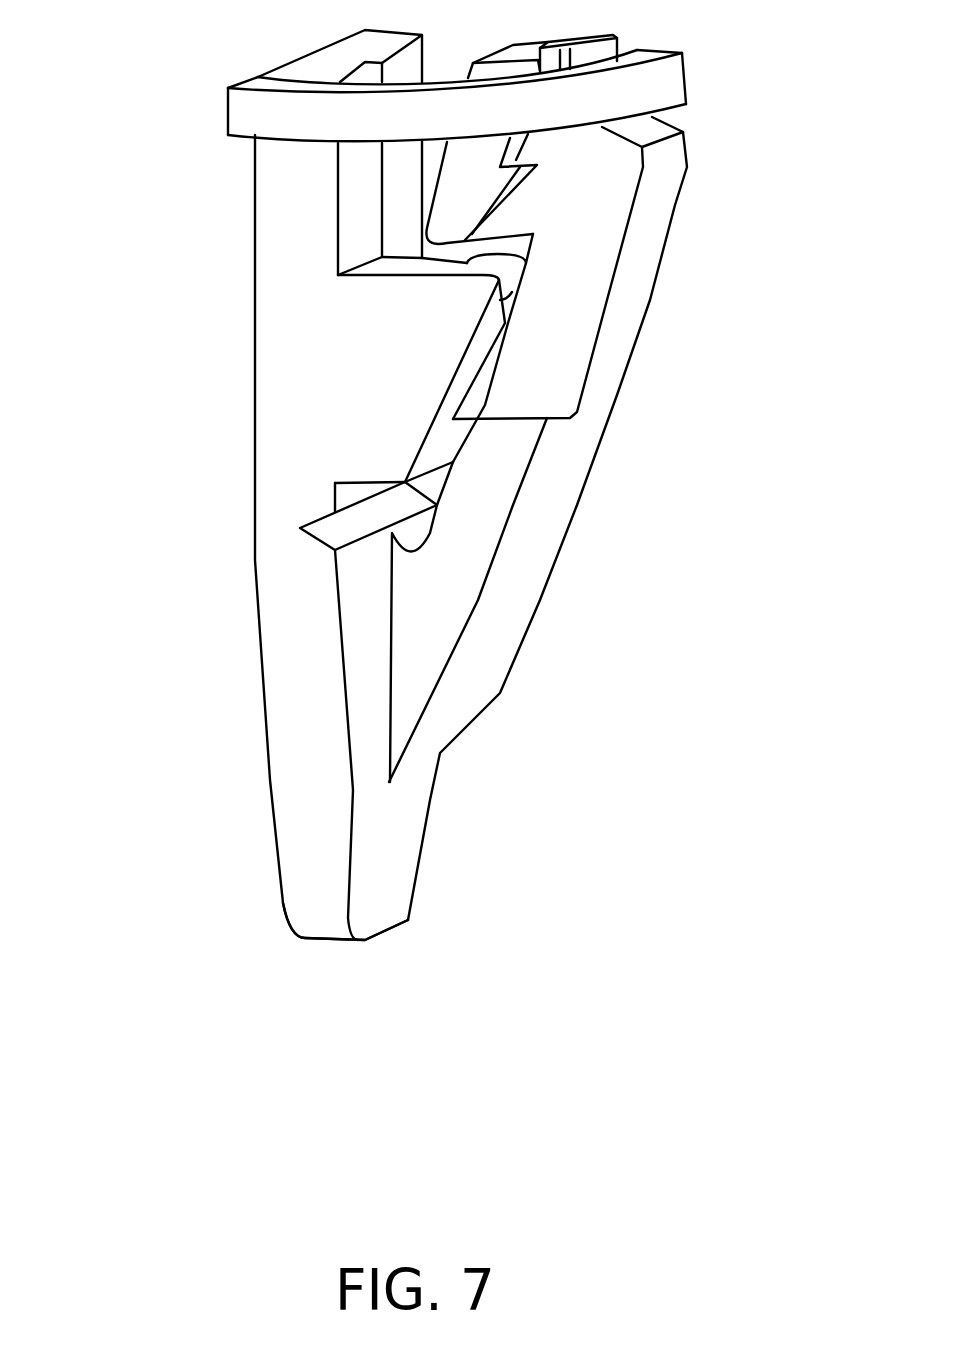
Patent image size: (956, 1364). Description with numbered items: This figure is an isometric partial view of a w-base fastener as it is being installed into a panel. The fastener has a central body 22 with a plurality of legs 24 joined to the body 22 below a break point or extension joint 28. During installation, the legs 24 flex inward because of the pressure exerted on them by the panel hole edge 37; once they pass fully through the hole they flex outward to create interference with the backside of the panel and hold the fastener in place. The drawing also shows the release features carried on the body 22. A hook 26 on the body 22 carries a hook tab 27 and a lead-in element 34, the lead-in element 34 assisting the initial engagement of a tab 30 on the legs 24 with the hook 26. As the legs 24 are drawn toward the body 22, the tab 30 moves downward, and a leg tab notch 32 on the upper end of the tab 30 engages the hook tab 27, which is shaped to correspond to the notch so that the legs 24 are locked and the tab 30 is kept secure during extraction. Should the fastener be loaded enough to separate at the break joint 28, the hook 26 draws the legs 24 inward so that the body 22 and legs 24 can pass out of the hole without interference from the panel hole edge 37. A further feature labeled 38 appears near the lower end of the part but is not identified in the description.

The body 22 is at (280, 213).
The legs 24 is at (583, 428).
The hook 26 is at (377, 363).
The hook tab 27 is at (512, 325).
The break point or extension joint 28 is at (300, 528).
The tab 30 is at (480, 193).
The leg tab notch 32 is at (505, 165).
The lead-in element 34 is at (520, 285).
The panel hole edge 37 is at (650, 80).
The solder tail 38 is at (318, 935).